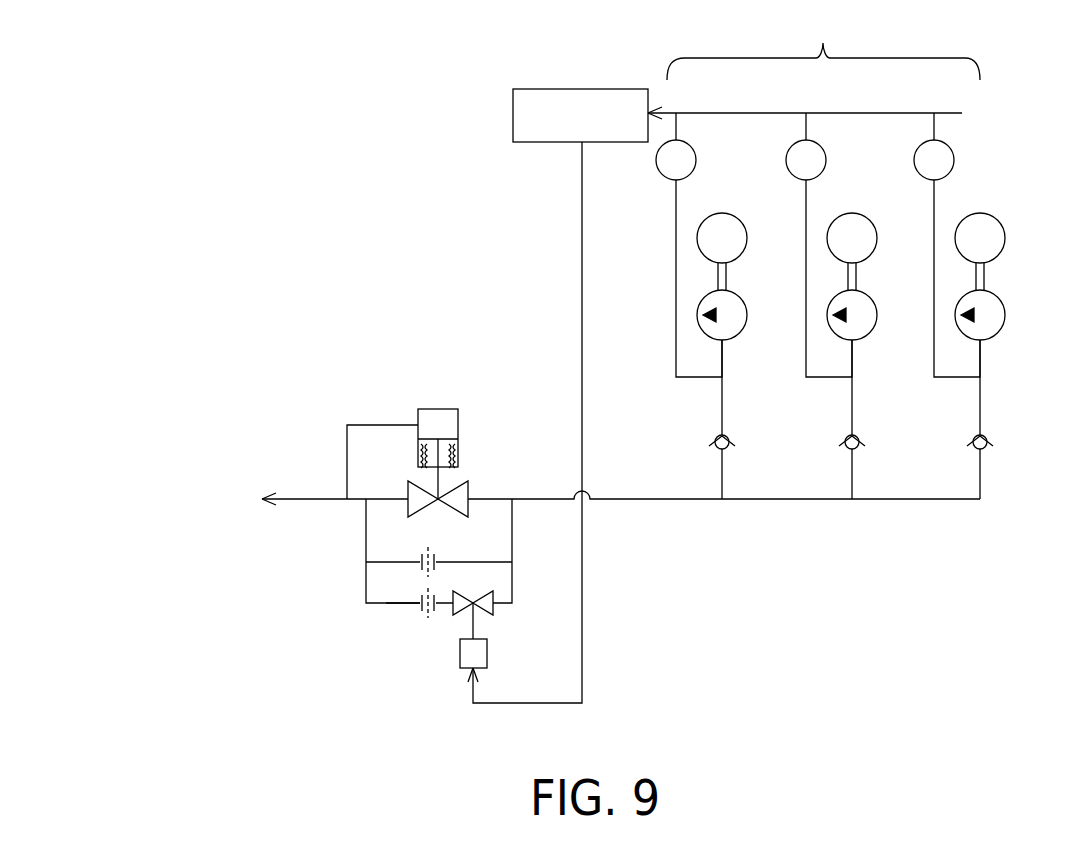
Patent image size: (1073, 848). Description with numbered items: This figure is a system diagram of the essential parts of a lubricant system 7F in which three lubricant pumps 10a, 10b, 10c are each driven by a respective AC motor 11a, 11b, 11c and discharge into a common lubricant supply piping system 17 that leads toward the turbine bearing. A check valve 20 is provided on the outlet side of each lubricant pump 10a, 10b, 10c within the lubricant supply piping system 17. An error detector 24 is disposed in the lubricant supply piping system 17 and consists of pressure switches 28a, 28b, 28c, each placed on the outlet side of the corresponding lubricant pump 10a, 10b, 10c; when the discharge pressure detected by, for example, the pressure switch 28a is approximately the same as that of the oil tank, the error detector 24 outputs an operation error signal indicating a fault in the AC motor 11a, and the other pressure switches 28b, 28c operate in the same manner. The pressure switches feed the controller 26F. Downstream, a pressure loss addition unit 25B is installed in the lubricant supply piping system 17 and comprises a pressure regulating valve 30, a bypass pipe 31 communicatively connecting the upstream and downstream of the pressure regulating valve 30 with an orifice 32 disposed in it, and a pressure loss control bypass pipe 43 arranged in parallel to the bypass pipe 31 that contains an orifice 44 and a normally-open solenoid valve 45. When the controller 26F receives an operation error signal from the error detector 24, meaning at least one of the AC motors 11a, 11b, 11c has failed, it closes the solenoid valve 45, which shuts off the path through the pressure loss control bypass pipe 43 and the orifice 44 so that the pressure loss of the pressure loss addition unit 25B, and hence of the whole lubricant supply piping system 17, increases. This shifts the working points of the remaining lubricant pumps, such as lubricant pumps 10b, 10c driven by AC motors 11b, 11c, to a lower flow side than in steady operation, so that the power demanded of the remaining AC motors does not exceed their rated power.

The lubricant system 7F is at (816, 514).
The lubricant pump 10a is at (747, 315).
The lubricant pump 10b is at (877, 315).
The lubricant pump 10c is at (1005, 315).
The AC motor 11a is at (747, 238).
The AC motor 11b is at (877, 238).
The AC motor 11c is at (1005, 238).
The lubricant supply piping system 17 is at (308, 499).
The check valve 20 is at (730, 442).
The error detector 24 is at (837, 37).
The pressure loss addition unit 25B is at (363, 614).
The controller 26F is at (513, 114).
The pressure switch 28a is at (692, 147).
The pressure switch 28b is at (822, 147).
The pressure switch 28c is at (950, 147).
The pressure regulating valve 30 is at (436, 409).
The bypass pipe 31 is at (513, 521).
The orifice 32 is at (420, 552).
The pressure loss control bypass pipe 43 is at (396, 606).
The orifice 44 is at (428, 612).
The normally-open solenoid valve 45 is at (495, 605).